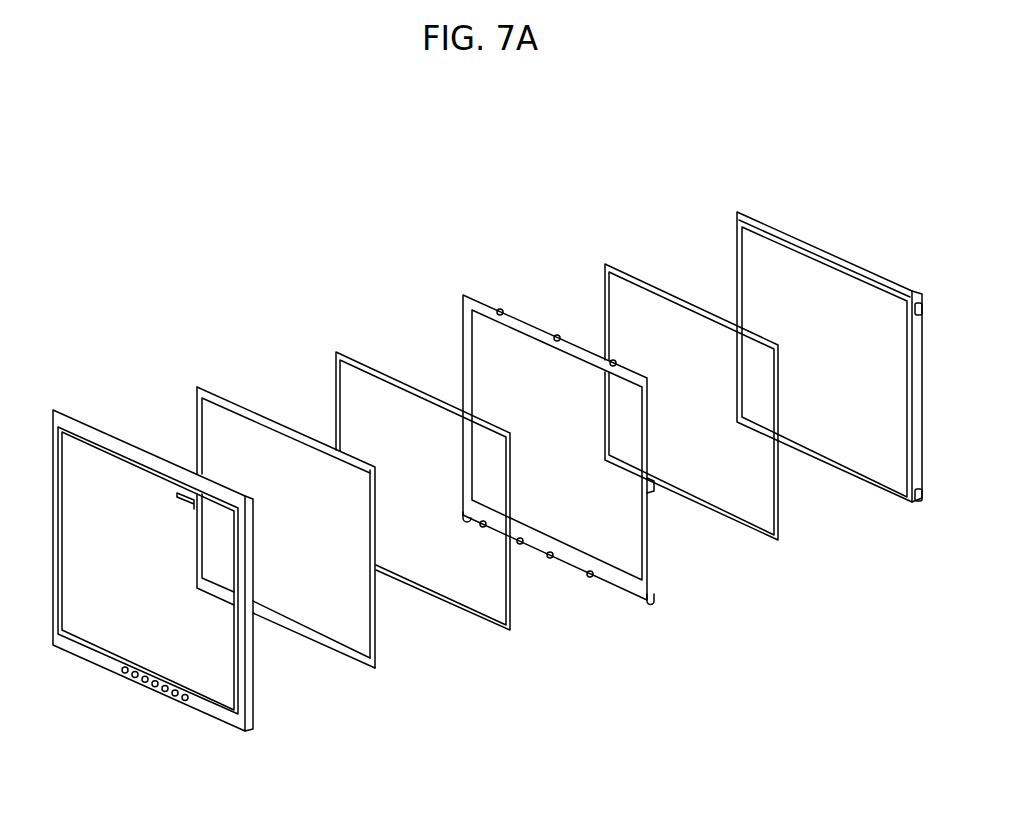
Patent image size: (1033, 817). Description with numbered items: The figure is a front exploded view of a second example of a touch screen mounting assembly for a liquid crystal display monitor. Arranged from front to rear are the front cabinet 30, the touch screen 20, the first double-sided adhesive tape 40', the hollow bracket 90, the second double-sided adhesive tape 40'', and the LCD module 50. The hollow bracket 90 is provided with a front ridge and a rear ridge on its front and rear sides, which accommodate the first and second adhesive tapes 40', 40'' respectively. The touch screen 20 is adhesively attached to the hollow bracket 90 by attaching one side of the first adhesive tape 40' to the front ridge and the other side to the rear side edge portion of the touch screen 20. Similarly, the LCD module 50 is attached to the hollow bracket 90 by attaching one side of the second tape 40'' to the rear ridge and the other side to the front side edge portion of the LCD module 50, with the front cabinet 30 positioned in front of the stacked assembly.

The front cabinet 30 is at (108, 429).
The touch screen 20 is at (246, 406).
The first double-sided adhesive tape 40' is at (423, 448).
The hollow bracket 90 is at (512, 316).
The second double-sided adhesive tape 40'' is at (691, 358).
The LCD module 50 is at (791, 234).